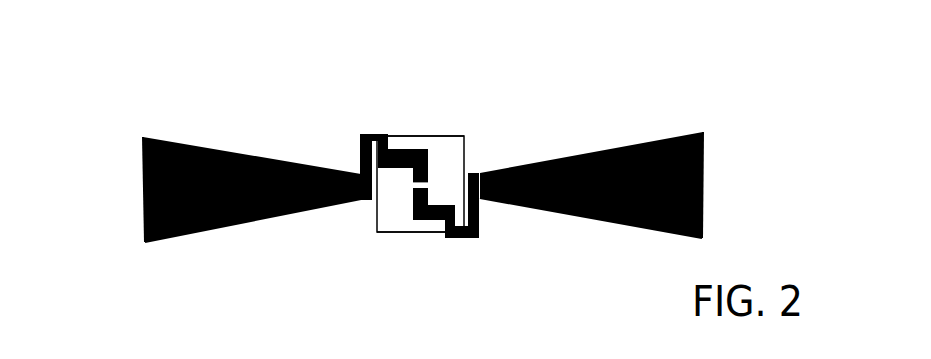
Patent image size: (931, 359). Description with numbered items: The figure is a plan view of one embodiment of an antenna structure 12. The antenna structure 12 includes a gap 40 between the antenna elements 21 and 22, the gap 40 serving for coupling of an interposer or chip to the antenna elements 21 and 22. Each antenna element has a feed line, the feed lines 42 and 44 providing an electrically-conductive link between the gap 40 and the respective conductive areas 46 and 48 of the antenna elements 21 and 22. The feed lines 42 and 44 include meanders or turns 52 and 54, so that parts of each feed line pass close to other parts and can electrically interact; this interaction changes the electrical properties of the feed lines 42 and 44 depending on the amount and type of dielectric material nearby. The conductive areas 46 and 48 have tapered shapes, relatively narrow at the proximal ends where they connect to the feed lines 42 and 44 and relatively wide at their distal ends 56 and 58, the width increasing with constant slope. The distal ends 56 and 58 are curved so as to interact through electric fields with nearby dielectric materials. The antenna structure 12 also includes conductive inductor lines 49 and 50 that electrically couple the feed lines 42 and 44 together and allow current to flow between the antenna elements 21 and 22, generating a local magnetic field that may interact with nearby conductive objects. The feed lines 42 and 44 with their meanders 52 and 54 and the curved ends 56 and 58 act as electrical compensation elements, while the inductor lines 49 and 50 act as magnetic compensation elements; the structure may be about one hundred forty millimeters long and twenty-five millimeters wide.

The antenna structure 12 is at (499, 82).
The antenna element 21 is at (244, 141).
The antenna element 22 is at (588, 140).
The gap 40 is at (428, 187).
The feed line 42 is at (373, 131).
The feed line 44 is at (467, 252).
The conductive area 46 is at (265, 220).
The conductive area 48 is at (623, 220).
The conductive inductor line 49 is at (432, 135).
The conductive inductor line 50 is at (393, 235).
The meander 52 is at (390, 135).
The meander 54 is at (477, 240).
The distal end 56 is at (140, 190).
The distal end 58 is at (707, 175).